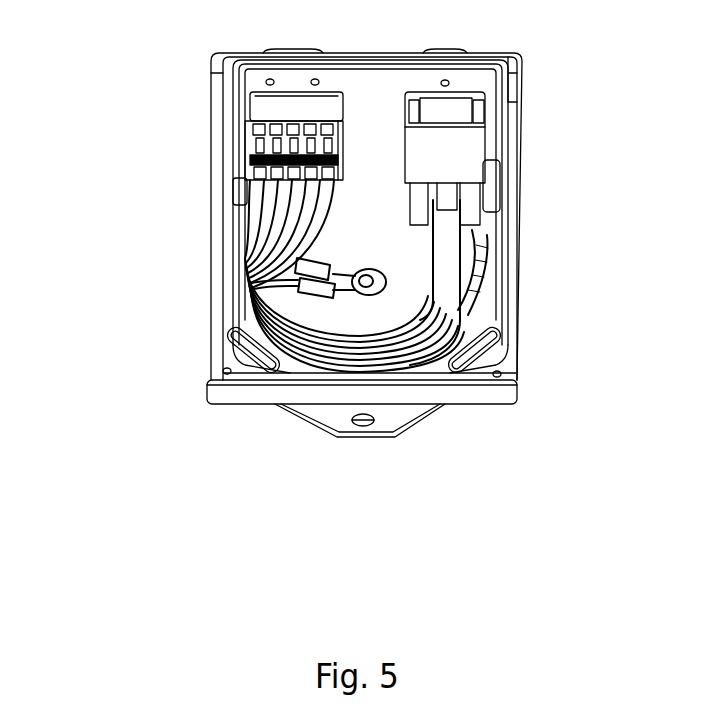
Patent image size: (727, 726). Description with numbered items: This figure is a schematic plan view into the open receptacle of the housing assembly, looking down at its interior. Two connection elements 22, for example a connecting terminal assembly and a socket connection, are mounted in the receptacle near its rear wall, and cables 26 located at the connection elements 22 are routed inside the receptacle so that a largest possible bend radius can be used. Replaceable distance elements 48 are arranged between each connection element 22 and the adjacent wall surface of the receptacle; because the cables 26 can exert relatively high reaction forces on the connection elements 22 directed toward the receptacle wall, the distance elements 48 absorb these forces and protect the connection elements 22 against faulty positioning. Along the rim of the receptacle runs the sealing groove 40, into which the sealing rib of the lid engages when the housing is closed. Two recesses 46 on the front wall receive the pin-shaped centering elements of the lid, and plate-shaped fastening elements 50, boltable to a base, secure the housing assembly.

The connection element 22 is at (263, 102).
The cable 26 is at (260, 263).
The sealing groove 40 is at (470, 378).
The recess 46 is at (238, 347).
The distance element 48 is at (242, 190).
The fastening element 50 is at (397, 415).